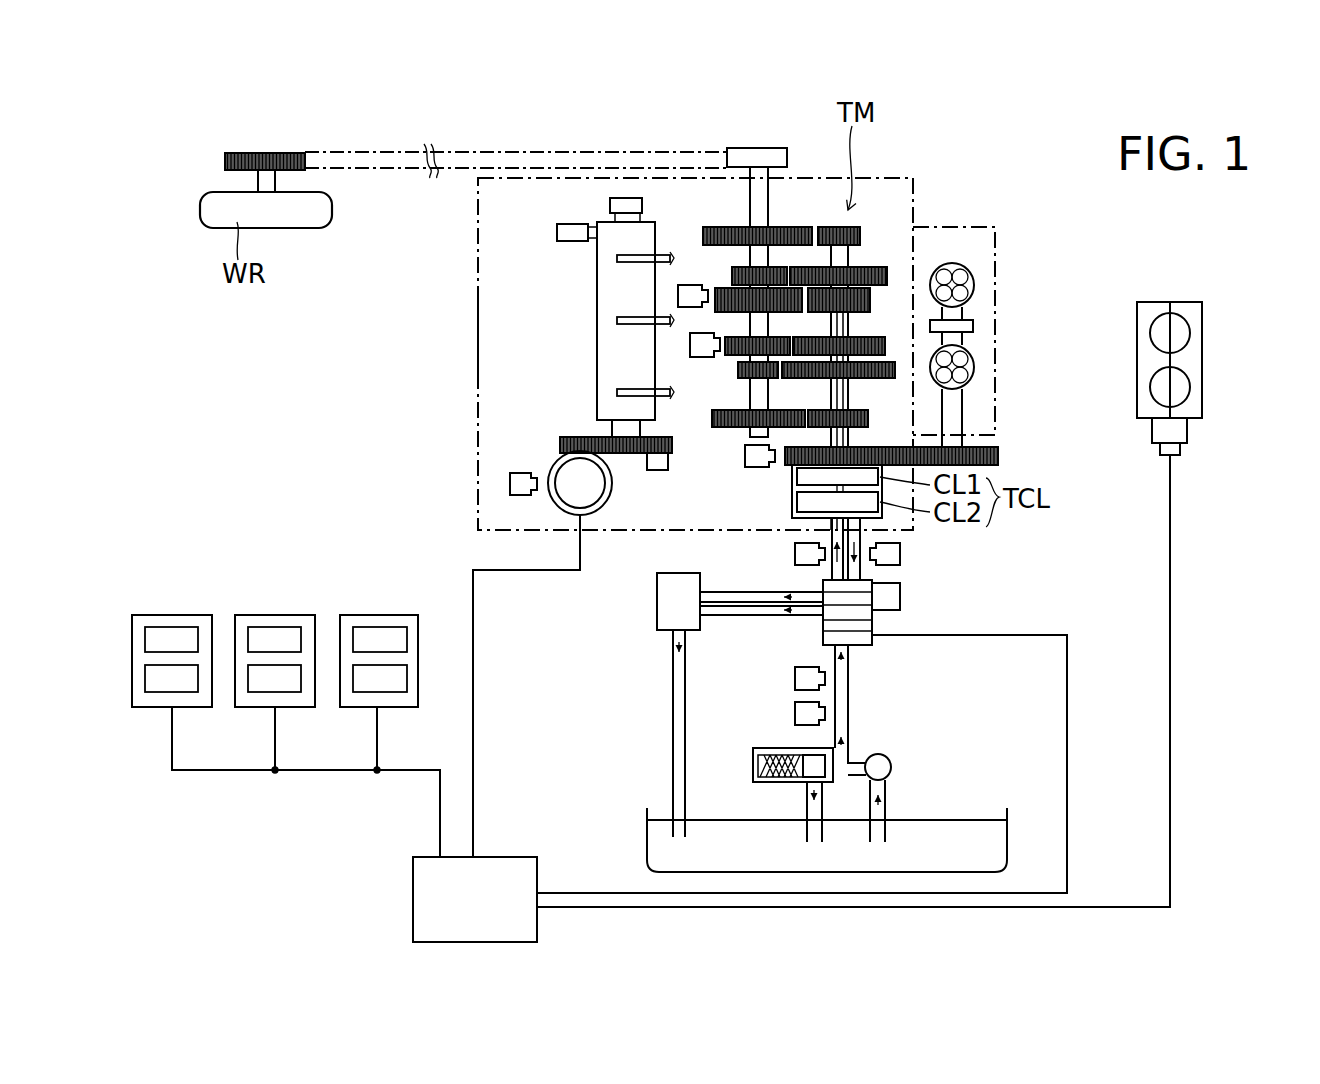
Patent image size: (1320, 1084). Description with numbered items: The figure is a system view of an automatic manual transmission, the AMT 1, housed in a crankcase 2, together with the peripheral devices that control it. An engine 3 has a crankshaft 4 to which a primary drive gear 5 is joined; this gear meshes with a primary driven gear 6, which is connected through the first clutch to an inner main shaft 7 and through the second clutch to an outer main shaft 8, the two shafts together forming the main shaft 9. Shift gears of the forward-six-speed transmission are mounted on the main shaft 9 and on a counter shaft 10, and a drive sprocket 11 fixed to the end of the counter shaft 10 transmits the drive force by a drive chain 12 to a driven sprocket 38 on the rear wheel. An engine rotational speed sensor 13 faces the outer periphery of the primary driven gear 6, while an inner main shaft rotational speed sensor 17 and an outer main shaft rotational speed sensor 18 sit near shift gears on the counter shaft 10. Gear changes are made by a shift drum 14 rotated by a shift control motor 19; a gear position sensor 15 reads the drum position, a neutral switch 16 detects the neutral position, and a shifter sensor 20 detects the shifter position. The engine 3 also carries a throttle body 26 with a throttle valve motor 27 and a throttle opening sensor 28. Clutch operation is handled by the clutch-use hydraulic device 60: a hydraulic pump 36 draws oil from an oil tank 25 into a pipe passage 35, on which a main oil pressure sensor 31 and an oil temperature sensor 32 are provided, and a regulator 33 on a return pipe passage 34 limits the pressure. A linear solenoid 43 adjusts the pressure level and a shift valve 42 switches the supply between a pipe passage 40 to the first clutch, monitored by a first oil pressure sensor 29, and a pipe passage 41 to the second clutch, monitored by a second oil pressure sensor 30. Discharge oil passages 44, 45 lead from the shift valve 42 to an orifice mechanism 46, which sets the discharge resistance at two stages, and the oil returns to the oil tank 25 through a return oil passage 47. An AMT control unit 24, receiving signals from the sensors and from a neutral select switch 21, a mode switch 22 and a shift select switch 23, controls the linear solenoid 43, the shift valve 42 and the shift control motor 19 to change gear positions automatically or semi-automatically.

The automatic manual transmission (AMT) 1 is at (474, 242).
The crankcase 2 is at (476, 343).
The engine 3 is at (981, 287).
The crankshaft 4 is at (955, 410).
The primary drive gear 5 is at (1000, 458).
The primary driven gear 6 is at (786, 468).
The inner main shaft 7 is at (846, 432).
The outer main shaft 8 is at (850, 395).
The main shaft 9 is at (848, 317).
The counter shaft 10 is at (768, 203).
The drive sprocket 11 is at (757, 148).
The drive chain 12 is at (661, 148).
The engine rotational speed sensor 13 is at (745, 455).
The shift drum 14 is at (655, 234).
The gear position sensor 15 is at (610, 205).
The neutral switch 16 is at (557, 233).
The inner main shaft rotational speed sensor 17 is at (678, 296).
The outer main shaft rotational speed sensor 18 is at (690, 344).
The shift control motor 19 is at (560, 449).
The shifter sensor 20 is at (525, 496).
The neutral select switch 21 is at (393, 615).
The mode switch 22 is at (298, 615).
The shift select switch 23 is at (185, 615).
The AMT control unit 24 is at (505, 862).
The oil tank 25 is at (647, 850).
The throttle body 26 is at (1203, 328).
The throttle valve motor 27 is at (1187, 428).
The throttle opening sensor 28 is at (1181, 452).
The first oil pressure sensor 29 is at (900, 554).
The second oil pressure sensor 30 is at (795, 554).
The main oil pressure sensor 31 is at (795, 676).
The oil temperature sensor 32 is at (795, 711).
The regulator 33 is at (755, 748).
The return pipe passage 34 is at (807, 805).
The pipe passage 35 is at (850, 722).
The hydraulic pump 36 is at (892, 767).
The driven sprocket 38 is at (255, 160).
The pipe passage 40 is at (868, 578).
The pipe passage 41 is at (832, 570).
The shift valve 42 is at (900, 597).
The linear solenoid 43 is at (866, 640).
The discharge oil passage 44 is at (714, 592).
The discharge oil passage 45 is at (722, 616).
The orifice mechanism 46 is at (657, 605).
The return oil passage 47 is at (673, 662).
The clutch-use hydraulic device 60 is at (987, 621).